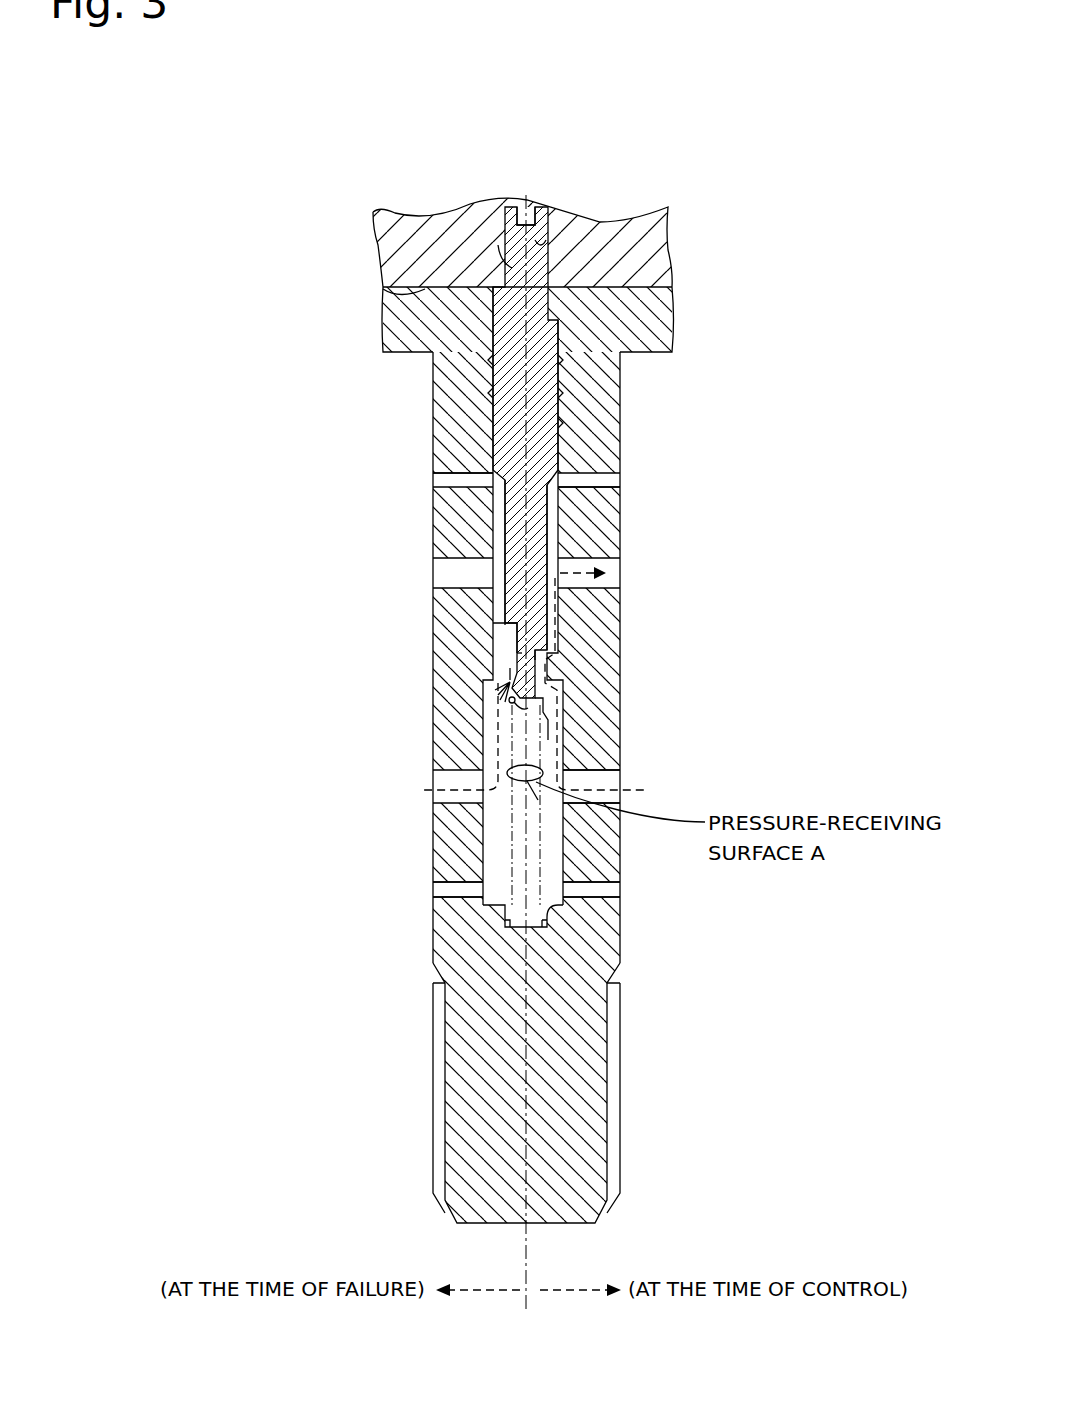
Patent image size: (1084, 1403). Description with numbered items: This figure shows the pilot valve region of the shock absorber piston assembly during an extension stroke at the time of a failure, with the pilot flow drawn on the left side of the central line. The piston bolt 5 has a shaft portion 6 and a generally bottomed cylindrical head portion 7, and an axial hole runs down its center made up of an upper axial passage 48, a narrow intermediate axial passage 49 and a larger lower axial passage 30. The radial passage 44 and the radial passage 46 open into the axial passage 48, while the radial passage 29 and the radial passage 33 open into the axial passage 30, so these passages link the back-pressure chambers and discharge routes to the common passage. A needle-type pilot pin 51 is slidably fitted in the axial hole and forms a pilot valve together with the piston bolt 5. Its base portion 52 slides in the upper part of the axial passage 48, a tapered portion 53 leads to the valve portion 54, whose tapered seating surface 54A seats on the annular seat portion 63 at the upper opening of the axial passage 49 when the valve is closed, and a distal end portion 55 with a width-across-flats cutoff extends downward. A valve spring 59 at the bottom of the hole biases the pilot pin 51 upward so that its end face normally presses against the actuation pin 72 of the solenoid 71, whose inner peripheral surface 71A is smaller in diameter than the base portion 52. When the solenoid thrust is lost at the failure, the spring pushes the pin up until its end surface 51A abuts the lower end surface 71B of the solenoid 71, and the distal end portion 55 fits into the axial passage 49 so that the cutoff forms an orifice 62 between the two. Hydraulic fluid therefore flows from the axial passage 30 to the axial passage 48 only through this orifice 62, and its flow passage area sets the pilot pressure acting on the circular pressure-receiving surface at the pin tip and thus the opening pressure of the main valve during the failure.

The piston bolt 5 is at (433, 1102).
The shaft portion 6 is at (585, 1073).
The head portion 7 is at (655, 316).
The radial passage 29 is at (597, 888).
The axial passage 30 is at (496, 830).
The radial passage 33 is at (602, 783).
The radial passage 44 is at (600, 482).
The radial passage 46 is at (618, 580).
The axial passage 48 is at (498, 507).
The axial passage 49 is at (507, 671).
The pilot pin 51 is at (485, 408).
The end surface 51A is at (512, 270).
The base portion 52 is at (565, 372).
The tapered portion 53 is at (492, 457).
The valve portion 54 is at (540, 523).
The seating surface 54A is at (500, 636).
The distal end portion 55 is at (540, 716).
The valve spring 59 is at (508, 862).
The orifice 62 is at (506, 686).
The seat portion 63 is at (508, 658).
The solenoid 71 is at (632, 213).
The inner peripheral surface 71A is at (541, 245).
The lower end surface 71B is at (425, 289).
The actuation pin 72 is at (517, 224).